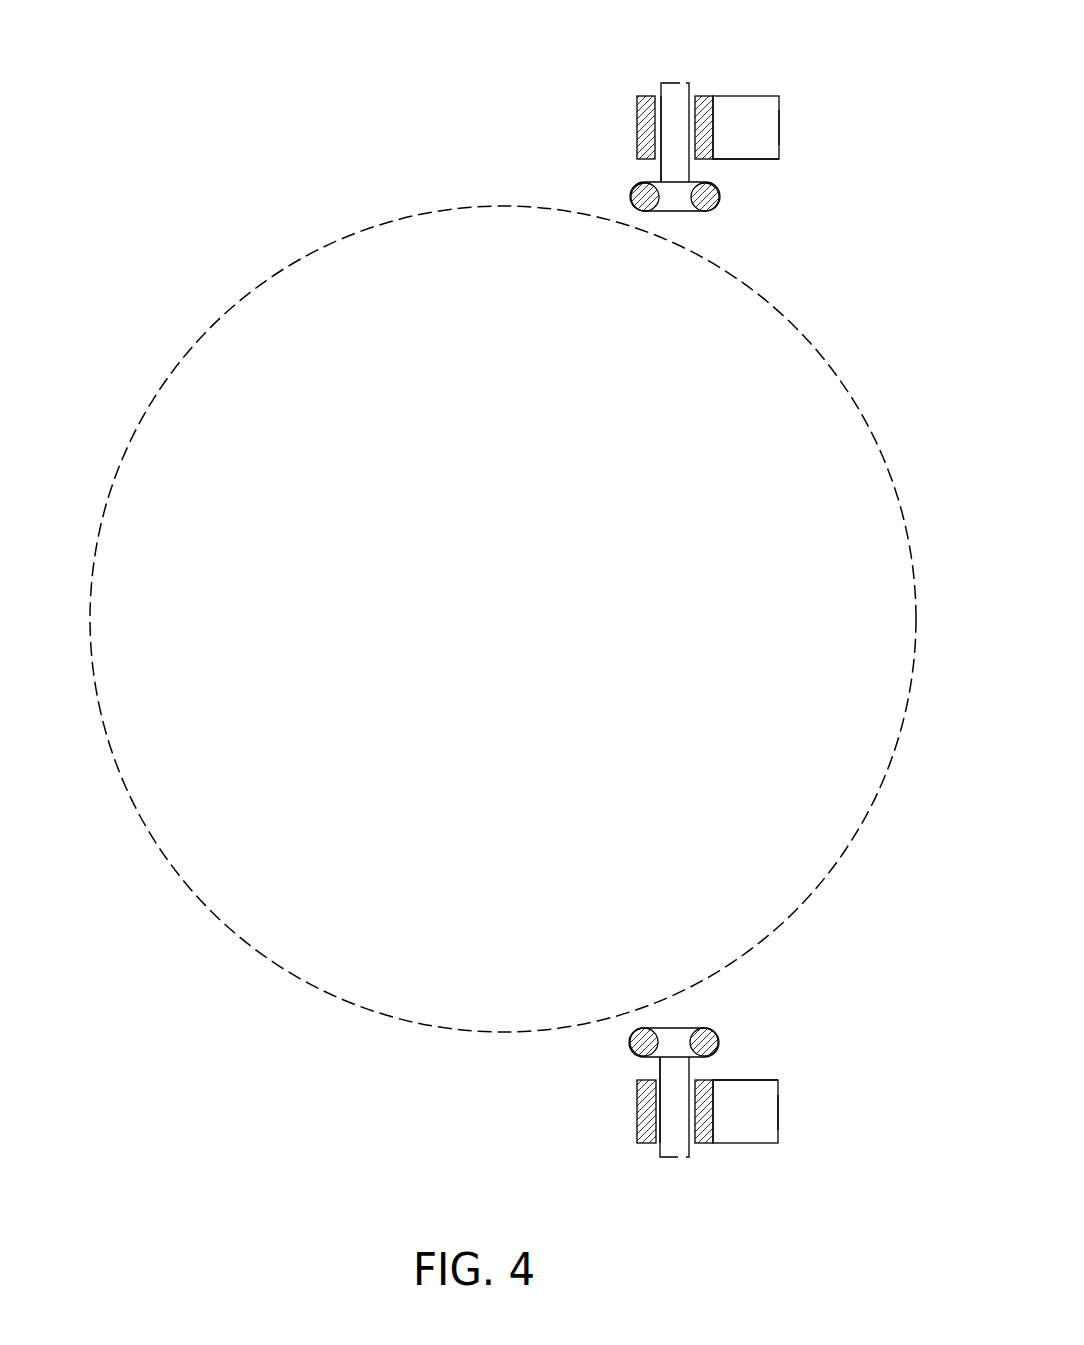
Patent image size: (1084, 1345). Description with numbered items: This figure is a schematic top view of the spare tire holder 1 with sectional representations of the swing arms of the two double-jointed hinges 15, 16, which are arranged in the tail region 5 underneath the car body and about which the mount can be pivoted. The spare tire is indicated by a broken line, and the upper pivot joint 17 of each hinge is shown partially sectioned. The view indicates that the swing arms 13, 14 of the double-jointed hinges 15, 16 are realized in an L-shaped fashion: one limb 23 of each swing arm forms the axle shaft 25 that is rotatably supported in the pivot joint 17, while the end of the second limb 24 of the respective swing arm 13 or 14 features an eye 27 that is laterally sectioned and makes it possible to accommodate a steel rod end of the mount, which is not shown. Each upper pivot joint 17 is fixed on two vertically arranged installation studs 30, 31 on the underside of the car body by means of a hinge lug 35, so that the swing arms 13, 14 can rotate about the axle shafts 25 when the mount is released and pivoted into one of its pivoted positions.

The spare tire holder 1 is at (885, 259).
The tail region 5 is at (64, 633).
The swing arm 13 is at (660, 174).
The swing arm 14 is at (660, 1060).
The double-jointed hinge 15 is at (628, 147).
The double-jointed hinge 16 is at (615, 1122).
The upper pivot joint 17 is at (702, 84).
The limb 23 is at (678, 94).
The second limb 24 is at (668, 212).
The axle shaft 25 is at (668, 100).
The eye 27 is at (713, 197).
The installation stud 30 is at (745, 107).
The installation stud 31 is at (762, 147).
The hinge lug 35 is at (762, 123).